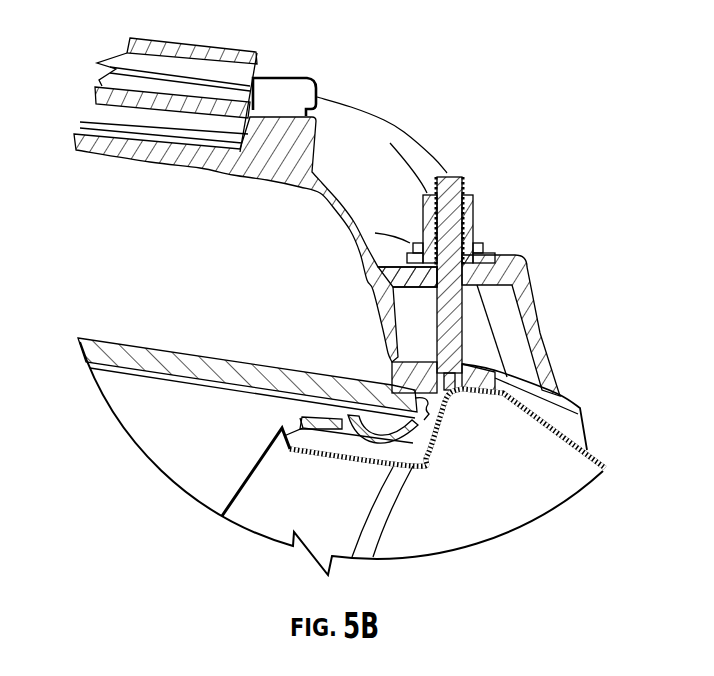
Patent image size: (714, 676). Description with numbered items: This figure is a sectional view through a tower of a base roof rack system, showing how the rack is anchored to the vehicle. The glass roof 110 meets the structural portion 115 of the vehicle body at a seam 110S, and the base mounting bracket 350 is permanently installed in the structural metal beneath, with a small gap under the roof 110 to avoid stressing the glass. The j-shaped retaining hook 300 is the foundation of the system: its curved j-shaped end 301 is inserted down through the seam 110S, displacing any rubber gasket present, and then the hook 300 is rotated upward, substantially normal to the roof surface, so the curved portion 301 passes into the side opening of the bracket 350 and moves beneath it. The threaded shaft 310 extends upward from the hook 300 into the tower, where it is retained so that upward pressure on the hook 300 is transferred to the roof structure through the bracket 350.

The threaded shaft 310 is at (443, 172).
The j-shaped retaining hook 300 is at (468, 323).
The roof 110 is at (230, 360).
The seam 110S is at (435, 393).
The structural portion 115 is at (486, 510).
The j-shaped end 301 is at (447, 420).
The base mounting bracket 350 is at (313, 443).